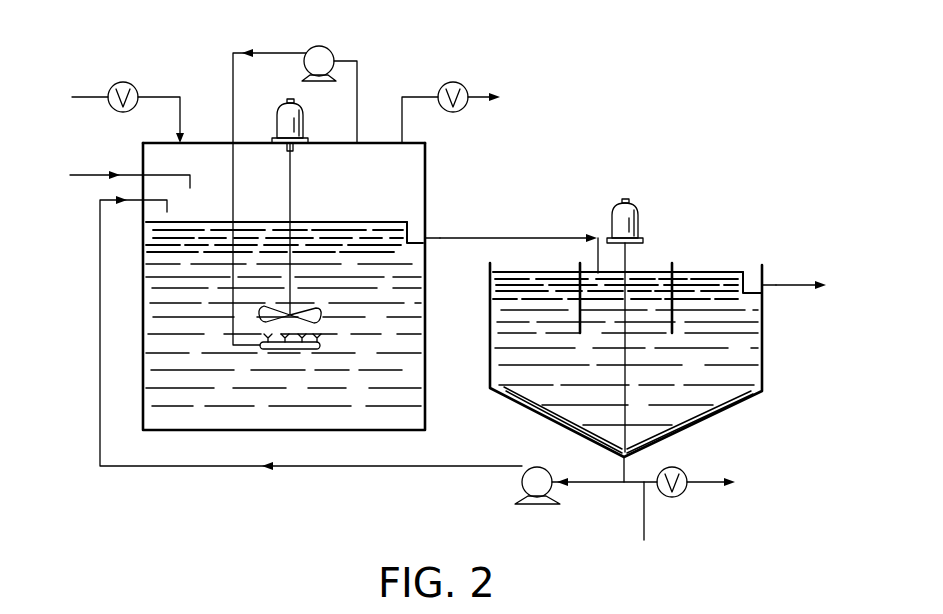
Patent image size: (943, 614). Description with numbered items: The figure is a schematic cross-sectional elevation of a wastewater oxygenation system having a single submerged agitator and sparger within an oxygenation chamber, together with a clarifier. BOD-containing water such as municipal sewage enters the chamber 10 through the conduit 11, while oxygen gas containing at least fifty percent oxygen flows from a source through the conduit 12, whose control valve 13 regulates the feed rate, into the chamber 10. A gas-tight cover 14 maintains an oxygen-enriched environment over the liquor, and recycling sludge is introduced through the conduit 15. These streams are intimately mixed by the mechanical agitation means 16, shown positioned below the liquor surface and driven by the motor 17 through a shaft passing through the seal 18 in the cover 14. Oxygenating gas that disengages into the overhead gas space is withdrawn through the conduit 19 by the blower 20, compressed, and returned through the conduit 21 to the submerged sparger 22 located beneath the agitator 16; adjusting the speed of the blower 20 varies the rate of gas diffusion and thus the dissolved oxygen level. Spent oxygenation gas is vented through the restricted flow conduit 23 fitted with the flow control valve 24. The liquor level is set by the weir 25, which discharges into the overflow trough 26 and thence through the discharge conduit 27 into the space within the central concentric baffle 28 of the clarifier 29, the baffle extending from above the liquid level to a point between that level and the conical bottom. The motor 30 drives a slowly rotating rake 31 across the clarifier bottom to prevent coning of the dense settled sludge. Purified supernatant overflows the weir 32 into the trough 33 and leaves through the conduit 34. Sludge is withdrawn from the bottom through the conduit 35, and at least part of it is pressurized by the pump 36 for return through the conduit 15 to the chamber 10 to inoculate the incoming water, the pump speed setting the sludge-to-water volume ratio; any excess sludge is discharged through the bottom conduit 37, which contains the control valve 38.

The chamber 10 is at (143, 325).
The conduit 11 is at (72, 175).
The conduit 12 is at (78, 95).
The control valve 13 is at (126, 82).
The gas-tight cover 14 is at (201, 142).
The conduit 15 is at (99, 427).
The mechanical agitation means 16 is at (312, 315).
The motor 17 is at (283, 118).
The seal 18 is at (287, 152).
The conduit 19 is at (358, 58).
The blower 20 is at (316, 47).
The conduit 21 is at (265, 50).
The submerged sparger 22 is at (287, 350).
The restricted flow conduit 23 is at (408, 95).
The flow control valve 24 is at (455, 82).
The weir 25 is at (414, 232).
The overflow trough 26 is at (429, 235).
The discharge conduit 27 is at (522, 237).
The central concentric baffle 28 is at (673, 262).
The clarifier 29 is at (754, 360).
The motor 30 is at (620, 210).
The rake 31 is at (712, 415).
The weir 32 is at (747, 271).
The trough 33 is at (754, 282).
The conduit 34 is at (789, 283).
The conduit 35 is at (610, 483).
The pump 36 is at (531, 467).
The bottom conduit 37 is at (635, 529).
The control valve 38 is at (679, 497).